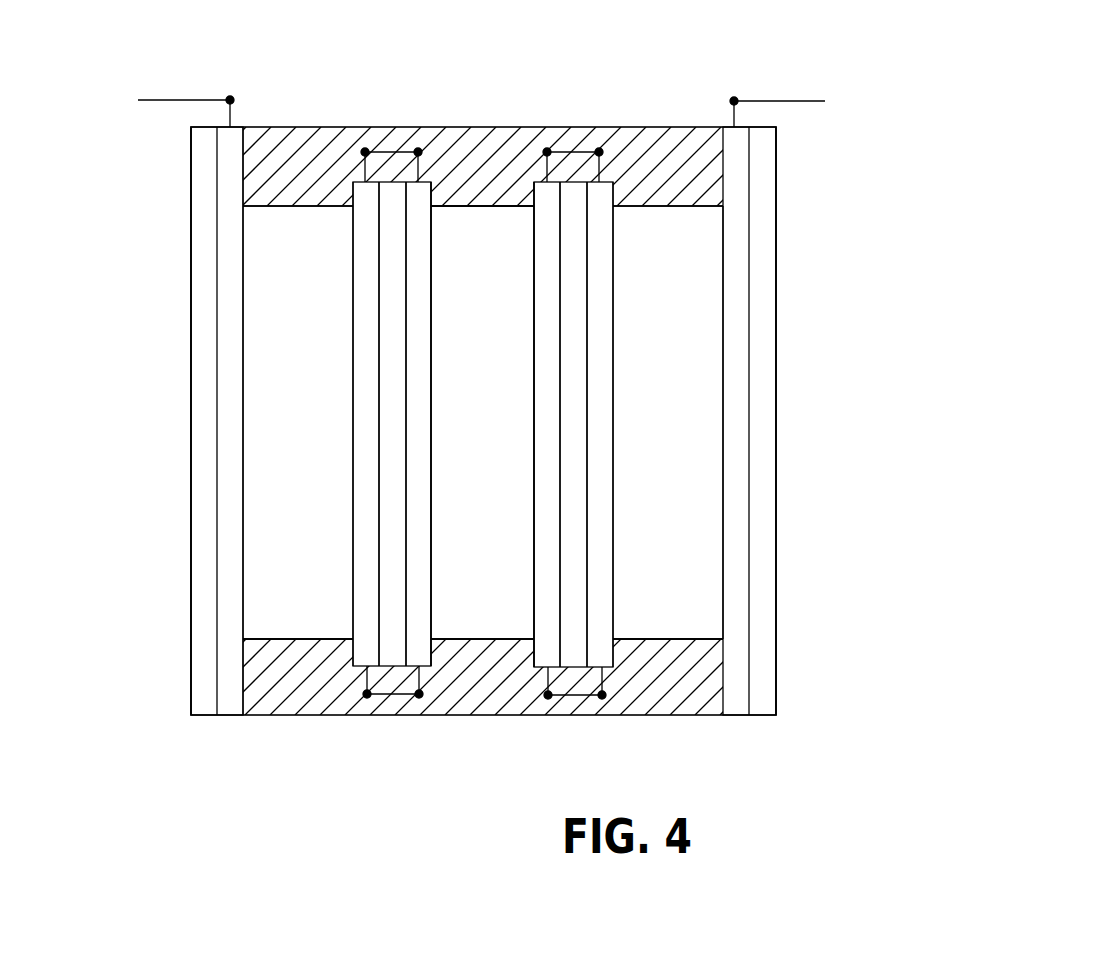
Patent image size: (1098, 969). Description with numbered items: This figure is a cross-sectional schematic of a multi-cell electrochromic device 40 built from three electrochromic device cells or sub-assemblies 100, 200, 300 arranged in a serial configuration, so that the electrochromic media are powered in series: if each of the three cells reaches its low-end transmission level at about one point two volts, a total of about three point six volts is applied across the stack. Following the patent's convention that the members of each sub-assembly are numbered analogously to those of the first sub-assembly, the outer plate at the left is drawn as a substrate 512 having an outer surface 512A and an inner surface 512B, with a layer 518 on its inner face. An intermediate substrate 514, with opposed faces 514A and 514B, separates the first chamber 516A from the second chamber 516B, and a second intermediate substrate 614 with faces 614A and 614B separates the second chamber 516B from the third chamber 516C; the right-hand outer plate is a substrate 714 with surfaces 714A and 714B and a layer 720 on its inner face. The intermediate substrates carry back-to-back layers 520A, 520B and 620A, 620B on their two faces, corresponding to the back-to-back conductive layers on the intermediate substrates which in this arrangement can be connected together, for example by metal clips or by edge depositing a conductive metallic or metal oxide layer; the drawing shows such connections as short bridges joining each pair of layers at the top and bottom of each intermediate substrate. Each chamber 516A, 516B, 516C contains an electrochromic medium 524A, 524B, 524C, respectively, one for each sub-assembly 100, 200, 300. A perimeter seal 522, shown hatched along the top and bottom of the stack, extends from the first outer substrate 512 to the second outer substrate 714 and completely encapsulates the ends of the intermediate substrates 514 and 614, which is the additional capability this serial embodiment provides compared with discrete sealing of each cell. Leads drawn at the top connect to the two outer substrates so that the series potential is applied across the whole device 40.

The multi-cell electrochromic device 40 is at (1007, 118).
The electrochromic device sub-assembly 100 is at (278, 63).
The electrochromic device sub-assembly 200 is at (462, 63).
The electrochromic device sub-assembly 300 is at (660, 63).
The first electrode plate 512 is at (207, 332).
The outer surface of first electrode plate 512A is at (192, 490).
The inner surface of first electrode plate 512B is at (218, 515).
The bipolar electrode 514 is at (390, 345).
The first side of bipolar electrode 514A is at (407, 527).
The second side of bipolar electrode 514B is at (380, 510).
The first chamber 516A is at (322, 388).
The second chamber 516B is at (508, 388).
The third chamber 516C is at (695, 388).
The active layer on first electrode plate 518 is at (230, 309).
The active layer on bipolar electrode first side 520A is at (370, 435).
The active layer on bipolar electrode second side 520B is at (413, 318).
The insulating frame / seal 522 is at (667, 138).
The first chamber port 524A is at (280, 600).
The second chamber port 524B is at (468, 600).
The third chamber port 524C is at (645, 600).
The second bipolar electrode 614 is at (575, 377).
The first side of second bipolar electrode 614A is at (560, 232).
The second side of second bipolar electrode 614B is at (587, 262).
The active layer on second bipolar electrode first side 620A is at (548, 437).
The active layer on second bipolar electrode second side 620B is at (600, 347).
The second electrode plate 714 is at (767, 453).
The inner surface of second electrode plate 714A is at (750, 247).
The outer surface of second electrode plate 714B is at (777, 216).
The active layer on second electrode plate 720 is at (735, 412).